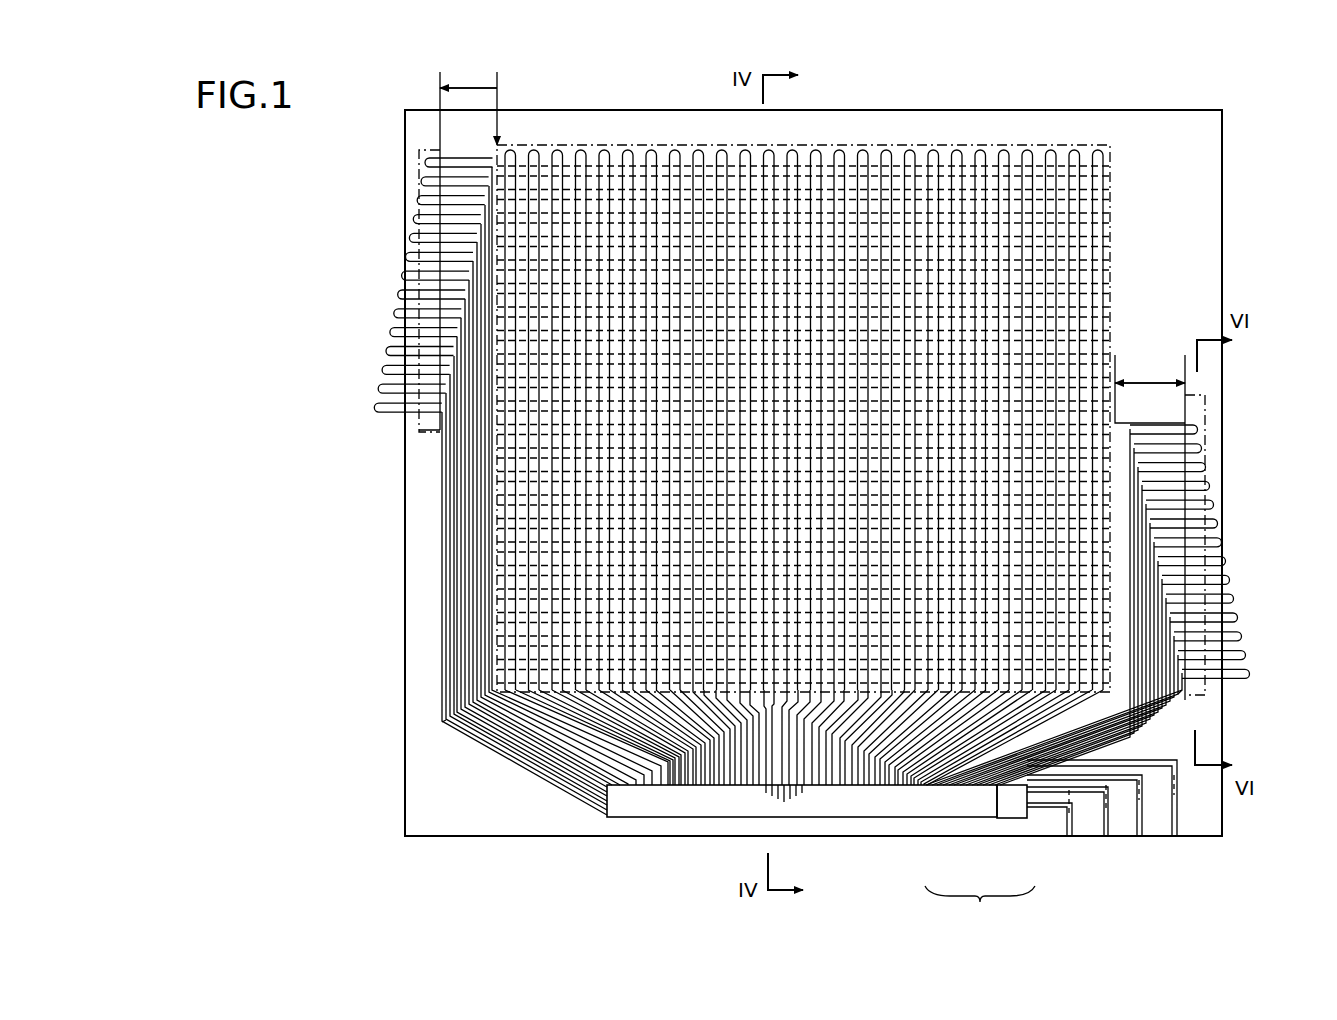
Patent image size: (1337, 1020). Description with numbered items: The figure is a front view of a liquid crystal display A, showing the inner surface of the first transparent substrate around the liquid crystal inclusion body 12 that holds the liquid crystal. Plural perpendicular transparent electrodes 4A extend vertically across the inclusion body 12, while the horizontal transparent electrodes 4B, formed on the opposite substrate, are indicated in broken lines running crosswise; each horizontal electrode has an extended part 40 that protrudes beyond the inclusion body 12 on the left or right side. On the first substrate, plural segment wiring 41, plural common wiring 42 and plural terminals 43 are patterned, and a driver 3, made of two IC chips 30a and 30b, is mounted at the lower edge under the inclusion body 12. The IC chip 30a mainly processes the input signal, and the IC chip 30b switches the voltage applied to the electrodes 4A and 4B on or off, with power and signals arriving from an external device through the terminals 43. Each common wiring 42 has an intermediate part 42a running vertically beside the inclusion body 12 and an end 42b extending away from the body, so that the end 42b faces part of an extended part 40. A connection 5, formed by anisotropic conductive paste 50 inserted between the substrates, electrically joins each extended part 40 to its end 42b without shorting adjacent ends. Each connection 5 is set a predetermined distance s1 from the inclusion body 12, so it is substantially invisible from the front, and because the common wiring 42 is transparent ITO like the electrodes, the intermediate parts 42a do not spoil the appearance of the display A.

The liquid crystal inclusion body 12 is at (1098, 135).
The liquid crystal display A is at (1250, 108).
The perpendicular transparent electrodes 4A is at (715, 155).
The horizontal transparent electrodes 4B is at (1112, 250).
The anisotropic conductive paste 50 is at (432, 148).
The connection 5 is at (419, 150).
The end 42b is at (428, 183).
The extended part 40 is at (425, 372).
The intermediate part 42a is at (445, 490).
The common wiring 42 is at (445, 693).
The segment wiring 41 is at (715, 770).
The IC chip 30b is at (935, 800).
The IC chip 30a is at (1005, 820).
The driver 3 is at (980, 907).
The terminals 43 is at (1075, 830).
The predetermined distance s1 is at (812, 221).